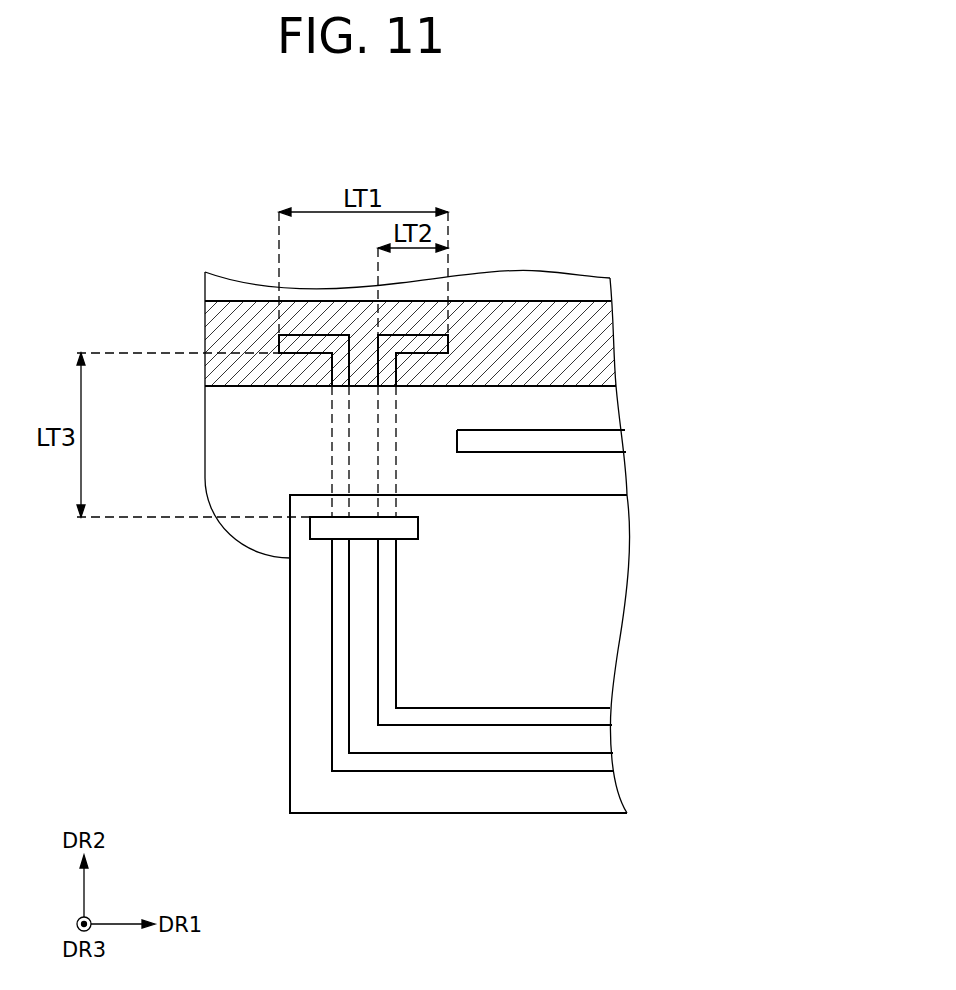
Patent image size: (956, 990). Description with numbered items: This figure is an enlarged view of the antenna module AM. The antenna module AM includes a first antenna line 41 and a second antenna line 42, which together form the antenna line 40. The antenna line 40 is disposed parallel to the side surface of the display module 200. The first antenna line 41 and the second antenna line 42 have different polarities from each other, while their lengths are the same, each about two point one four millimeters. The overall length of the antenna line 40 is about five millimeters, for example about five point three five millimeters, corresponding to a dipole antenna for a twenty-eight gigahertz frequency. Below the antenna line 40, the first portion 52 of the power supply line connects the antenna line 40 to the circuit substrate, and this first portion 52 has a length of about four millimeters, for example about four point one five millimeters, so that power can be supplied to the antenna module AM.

The display module 200 is at (597, 290).
The antenna line 40 is at (270, 376).
The first antenna line 41 is at (311, 343).
The second antenna line 42 is at (425, 343).
The first portion 52 is at (387, 475).
The antenna module AM is at (278, 344).